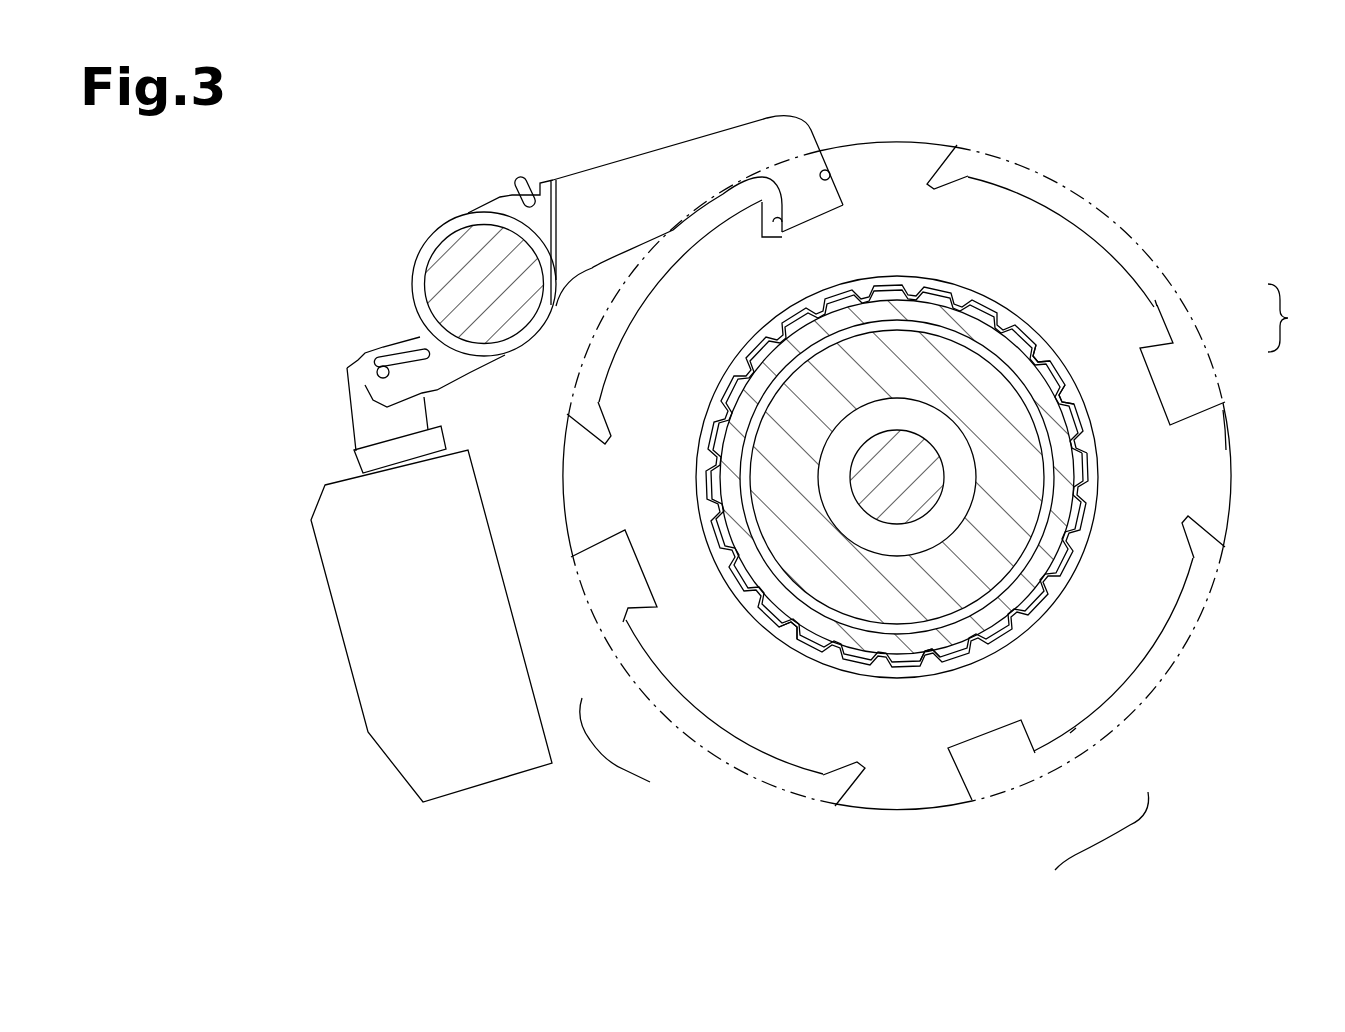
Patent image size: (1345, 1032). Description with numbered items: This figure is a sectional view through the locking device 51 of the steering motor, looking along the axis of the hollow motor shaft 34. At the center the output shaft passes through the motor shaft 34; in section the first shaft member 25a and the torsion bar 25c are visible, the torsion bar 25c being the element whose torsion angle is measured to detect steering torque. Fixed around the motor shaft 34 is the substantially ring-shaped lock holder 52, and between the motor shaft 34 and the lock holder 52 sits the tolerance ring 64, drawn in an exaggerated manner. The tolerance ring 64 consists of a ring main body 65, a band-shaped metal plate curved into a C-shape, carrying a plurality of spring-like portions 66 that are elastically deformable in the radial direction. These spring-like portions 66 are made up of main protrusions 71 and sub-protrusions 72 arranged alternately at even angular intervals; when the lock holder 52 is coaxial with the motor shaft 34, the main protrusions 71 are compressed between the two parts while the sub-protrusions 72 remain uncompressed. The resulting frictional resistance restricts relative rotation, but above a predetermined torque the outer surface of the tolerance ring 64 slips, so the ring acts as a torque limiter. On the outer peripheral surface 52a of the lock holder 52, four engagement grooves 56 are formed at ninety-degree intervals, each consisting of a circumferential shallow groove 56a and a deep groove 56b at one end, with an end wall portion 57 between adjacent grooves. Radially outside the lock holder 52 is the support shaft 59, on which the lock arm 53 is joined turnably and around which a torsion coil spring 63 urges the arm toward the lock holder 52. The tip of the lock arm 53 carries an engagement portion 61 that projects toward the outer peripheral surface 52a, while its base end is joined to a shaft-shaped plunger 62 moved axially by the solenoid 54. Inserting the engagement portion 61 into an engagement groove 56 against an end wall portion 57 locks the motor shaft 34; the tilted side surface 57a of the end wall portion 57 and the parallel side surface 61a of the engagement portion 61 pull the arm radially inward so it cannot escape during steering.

The locking device 51 is at (1234, 146).
The lock holder 52 is at (1232, 400).
The outer peripheral surface 52a is at (1232, 430).
The lock arm 53 is at (620, 170).
The solenoid 54 is at (476, 786).
The engagement groove 56 is at (950, 579).
The shallow groove 56a is at (1160, 304).
The deep groove 56b is at (1153, 380).
The end wall portion 57 is at (899, 140).
The side surface 57a is at (985, 137).
The support shaft 59 is at (440, 258).
The engagement portion 61 is at (810, 228).
The side surface 61a is at (851, 210).
The plunger 62 is at (370, 435).
The torsion coil spring 63 is at (463, 222).
The tolerance ring 64 is at (999, 302).
The ring main body 65 is at (947, 282).
The spring-like portions 66 is at (897, 476).
The main protrusions 71 is at (785, 680).
The sub-protrusions 72 is at (950, 690).
The first shaft member 25a is at (1040, 497).
The torsion bar 25c is at (935, 455).
The motor shaft 34 is at (1085, 470).